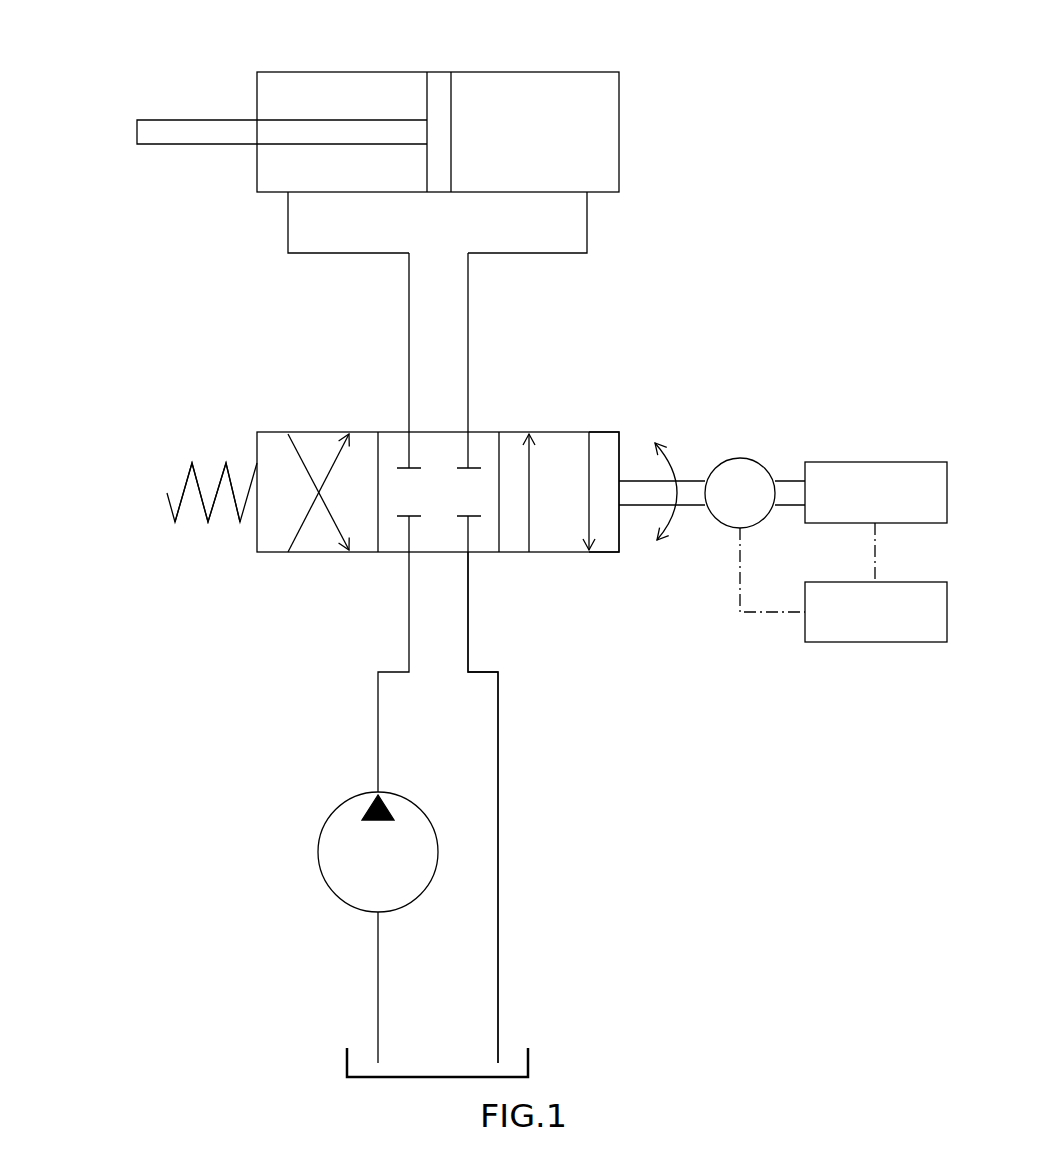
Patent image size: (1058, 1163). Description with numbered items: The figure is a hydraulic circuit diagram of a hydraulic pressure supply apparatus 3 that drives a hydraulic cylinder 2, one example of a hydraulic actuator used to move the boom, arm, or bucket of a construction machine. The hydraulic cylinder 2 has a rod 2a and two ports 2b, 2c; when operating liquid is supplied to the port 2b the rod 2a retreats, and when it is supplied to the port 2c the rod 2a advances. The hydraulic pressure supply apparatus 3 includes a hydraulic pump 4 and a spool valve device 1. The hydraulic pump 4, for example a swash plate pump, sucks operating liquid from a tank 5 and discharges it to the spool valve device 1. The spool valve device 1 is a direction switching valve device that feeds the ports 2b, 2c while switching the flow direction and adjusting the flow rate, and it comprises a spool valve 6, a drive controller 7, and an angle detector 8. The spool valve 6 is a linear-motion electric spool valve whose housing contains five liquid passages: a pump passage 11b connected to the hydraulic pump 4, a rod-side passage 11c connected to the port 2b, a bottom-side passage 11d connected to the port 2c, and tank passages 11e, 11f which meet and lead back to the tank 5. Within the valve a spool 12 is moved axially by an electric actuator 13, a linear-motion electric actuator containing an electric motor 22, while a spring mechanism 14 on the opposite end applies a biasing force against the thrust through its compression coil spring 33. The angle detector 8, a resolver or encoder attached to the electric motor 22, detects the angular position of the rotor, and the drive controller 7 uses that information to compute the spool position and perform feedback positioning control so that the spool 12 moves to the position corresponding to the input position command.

The spool valve device 1 is at (820, 353).
The hydraulic cylinder 2 is at (606, 80).
The rod 2a is at (438, 80).
The port 2b is at (288, 193).
The port 2c is at (587, 193).
The hydraulic pressure supply apparatus 3 is at (118, 242).
The hydraulic pump 4 is at (330, 878).
The tank 5 is at (512, 1062).
The spool valve 6 is at (245, 402).
The drive controller 7 is at (898, 635).
The angle detector 8 is at (898, 468).
The pump passage 11b is at (408, 607).
The rod-side passage 11c is at (408, 408).
The bottom-side passage 11d is at (470, 408).
The tank passage 11e is at (468, 607).
The tank passage 11f is at (483, 807).
The spool 12 is at (605, 443).
The electric actuator 13 is at (708, 420).
The spring mechanism 14 is at (212, 534).
The electric motor 22 is at (752, 468).
The coil spring 33 is at (187, 477).